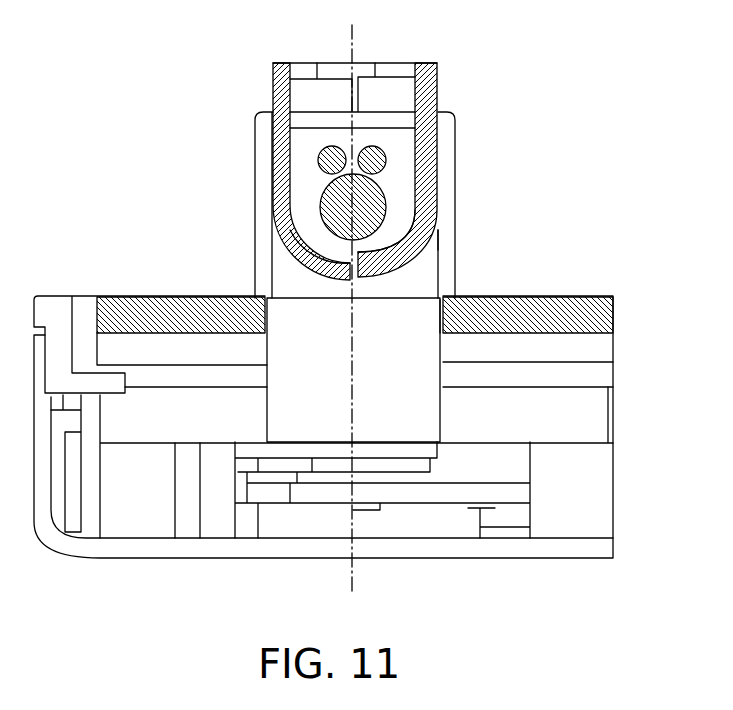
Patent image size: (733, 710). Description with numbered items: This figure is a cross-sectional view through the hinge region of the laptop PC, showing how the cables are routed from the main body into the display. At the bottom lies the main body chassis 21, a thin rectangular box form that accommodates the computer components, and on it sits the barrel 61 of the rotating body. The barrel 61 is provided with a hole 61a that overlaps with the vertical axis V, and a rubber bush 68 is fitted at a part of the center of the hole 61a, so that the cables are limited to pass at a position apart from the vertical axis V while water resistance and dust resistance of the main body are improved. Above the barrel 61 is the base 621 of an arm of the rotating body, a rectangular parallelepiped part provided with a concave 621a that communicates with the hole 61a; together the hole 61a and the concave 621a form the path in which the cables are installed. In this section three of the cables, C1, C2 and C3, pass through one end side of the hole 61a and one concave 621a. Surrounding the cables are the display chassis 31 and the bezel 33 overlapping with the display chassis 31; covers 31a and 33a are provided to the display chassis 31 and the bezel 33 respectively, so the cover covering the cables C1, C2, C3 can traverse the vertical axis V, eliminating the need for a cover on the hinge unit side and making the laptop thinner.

The vertical axis V is at (352, 296).
The main body chassis 21 is at (488, 540).
The display chassis 31 is at (273, 74).
The cover 31a is at (296, 251).
The bezel 33 is at (437, 72).
The cover 33a is at (405, 258).
The barrel 61 is at (603, 302).
The hole 61a is at (438, 316).
The rubber bush 68 is at (402, 420).
The base 621 is at (447, 197).
The concave 621a is at (430, 243).
The cable C1 is at (322, 215).
The cable C2 is at (386, 158).
The cable C3 is at (320, 165).